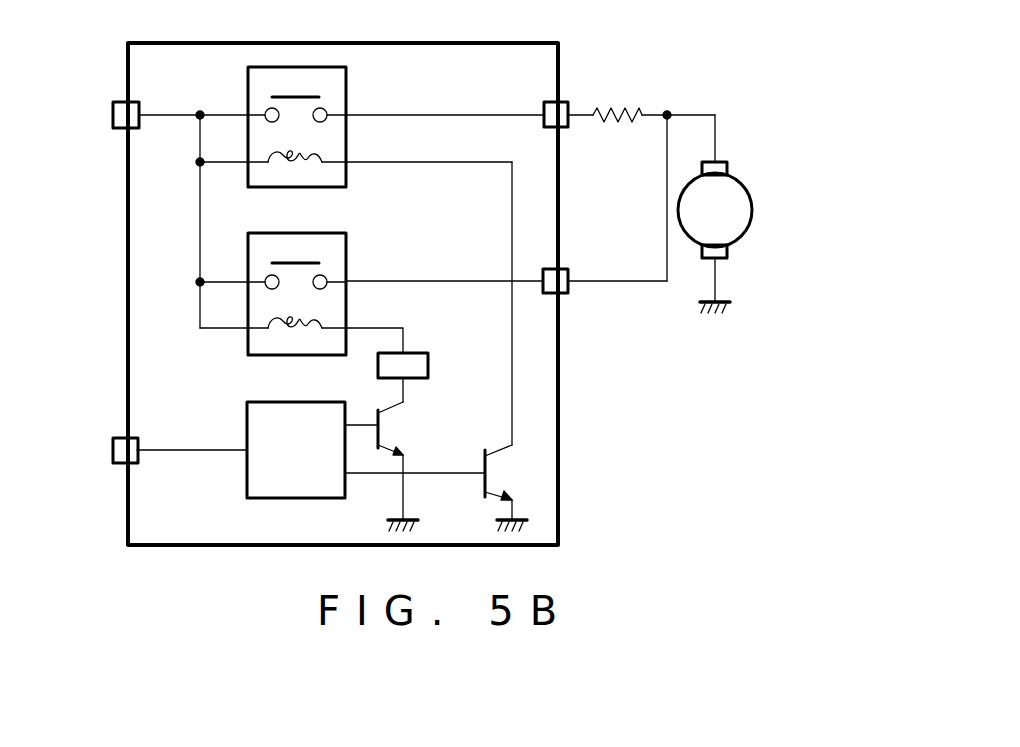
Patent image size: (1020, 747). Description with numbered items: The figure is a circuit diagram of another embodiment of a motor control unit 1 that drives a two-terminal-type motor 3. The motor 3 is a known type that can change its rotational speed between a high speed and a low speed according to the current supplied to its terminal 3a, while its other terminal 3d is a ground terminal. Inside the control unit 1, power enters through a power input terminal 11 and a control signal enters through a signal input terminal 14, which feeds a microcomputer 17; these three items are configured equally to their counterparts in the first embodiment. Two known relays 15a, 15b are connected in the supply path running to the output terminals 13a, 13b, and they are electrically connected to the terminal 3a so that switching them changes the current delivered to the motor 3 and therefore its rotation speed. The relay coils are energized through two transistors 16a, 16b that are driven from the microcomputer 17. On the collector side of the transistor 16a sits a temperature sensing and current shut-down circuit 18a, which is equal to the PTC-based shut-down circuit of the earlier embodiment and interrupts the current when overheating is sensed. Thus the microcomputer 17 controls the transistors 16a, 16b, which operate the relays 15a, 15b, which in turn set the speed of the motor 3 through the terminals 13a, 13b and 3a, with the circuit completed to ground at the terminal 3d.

The motor control unit 1 is at (488, 43).
The power input terminal 11 is at (110, 120).
The signal input terminal 14 is at (110, 455).
The output terminal 13a is at (562, 100).
The output terminal 13b is at (565, 295).
The relay 15a is at (346, 84).
The relay 15b is at (346, 252).
The microcomputer 17 is at (246, 425).
The temperature sensing and current shut-down circuit 18a is at (455, 347).
The transistor 16a is at (373, 407).
The transistor 16b is at (478, 462).
The two-terminal-type motor 3 is at (752, 205).
The terminal 3a is at (728, 168).
The ground terminal 3d is at (728, 255).